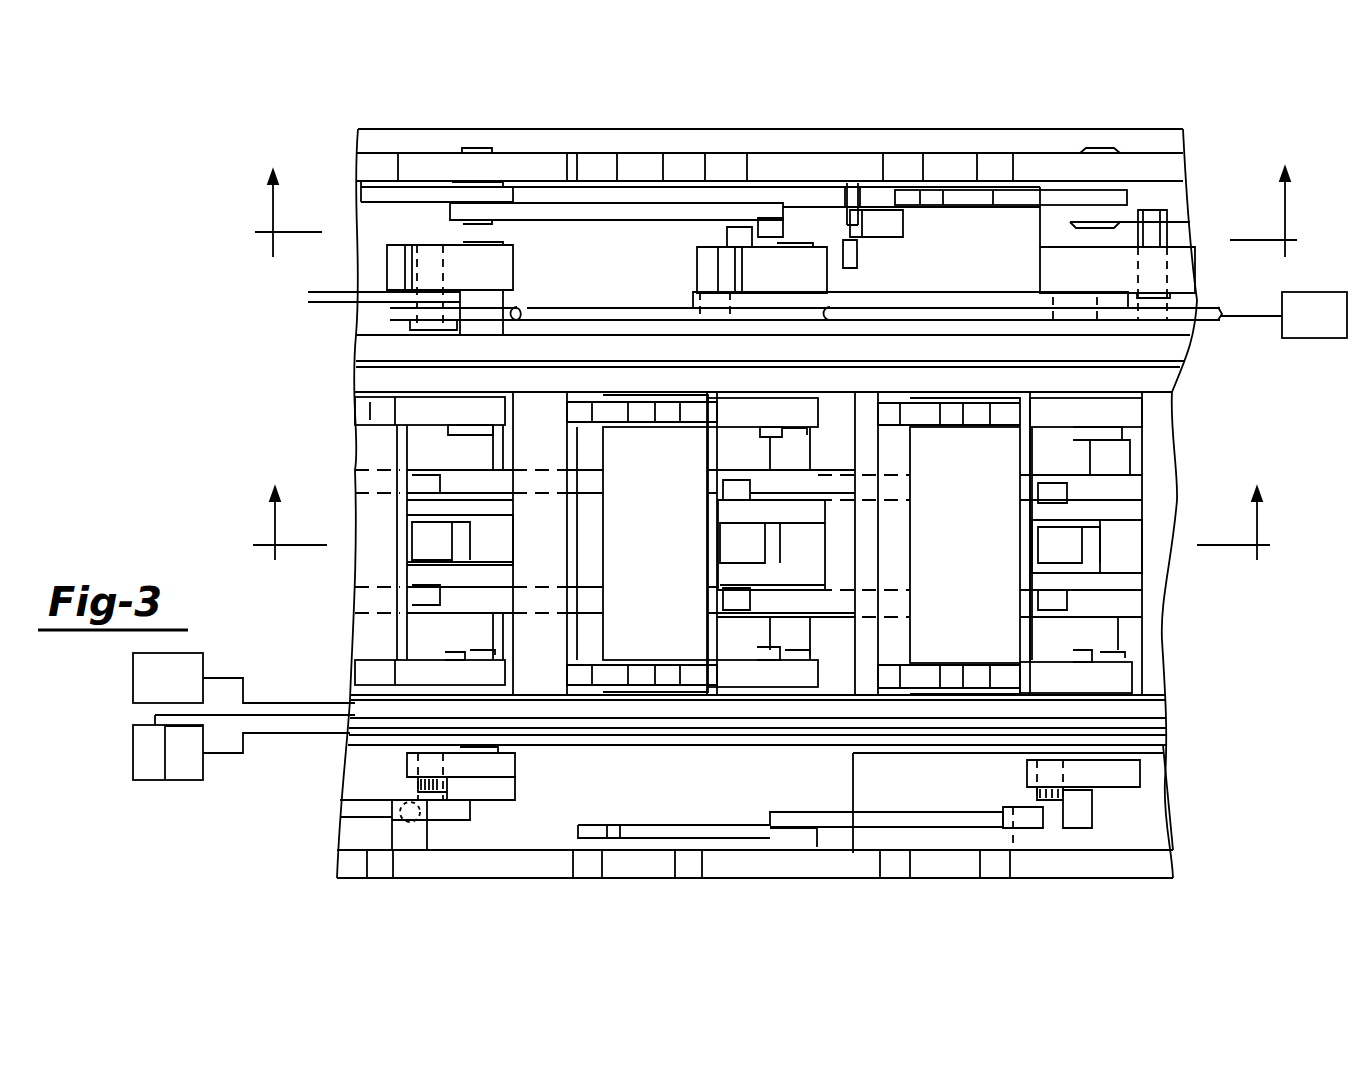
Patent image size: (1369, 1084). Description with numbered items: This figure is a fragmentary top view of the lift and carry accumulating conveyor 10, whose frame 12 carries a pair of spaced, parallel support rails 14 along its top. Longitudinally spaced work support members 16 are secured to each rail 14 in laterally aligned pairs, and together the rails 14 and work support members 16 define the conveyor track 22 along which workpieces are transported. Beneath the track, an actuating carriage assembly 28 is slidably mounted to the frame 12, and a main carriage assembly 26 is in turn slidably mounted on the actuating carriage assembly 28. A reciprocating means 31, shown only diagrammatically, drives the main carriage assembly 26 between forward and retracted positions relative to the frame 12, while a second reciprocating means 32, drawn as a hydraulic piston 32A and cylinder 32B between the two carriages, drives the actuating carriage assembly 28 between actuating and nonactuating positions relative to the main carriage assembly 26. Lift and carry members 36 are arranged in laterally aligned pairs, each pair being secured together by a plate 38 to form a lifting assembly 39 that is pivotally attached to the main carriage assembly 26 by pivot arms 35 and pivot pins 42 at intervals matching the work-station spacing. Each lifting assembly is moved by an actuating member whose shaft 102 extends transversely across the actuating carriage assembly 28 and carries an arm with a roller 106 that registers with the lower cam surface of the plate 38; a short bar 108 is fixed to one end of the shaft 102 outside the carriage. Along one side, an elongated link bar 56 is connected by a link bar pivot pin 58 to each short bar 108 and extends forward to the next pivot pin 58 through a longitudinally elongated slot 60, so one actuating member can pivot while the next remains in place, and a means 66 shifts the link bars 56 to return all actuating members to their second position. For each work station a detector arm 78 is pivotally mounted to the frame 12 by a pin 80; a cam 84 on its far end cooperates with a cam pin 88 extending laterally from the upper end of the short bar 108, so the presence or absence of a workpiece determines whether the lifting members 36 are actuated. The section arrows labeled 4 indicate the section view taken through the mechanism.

The section line 4- 4 is at (775, 344).
The lift and carry accumulating conveyor 10 is at (803, 68).
The frame 12 is at (508, 880).
The support rails 14 is at (1120, 878).
The work support members 16 is at (628, 870).
The conveyor track 22 is at (1338, 498).
The main carriage assembly 26 is at (1160, 713).
The actuating carriage assembly 28 is at (1157, 740).
The reciprocating means 31 is at (197, 660).
The second reciprocating means 32 is at (135, 762).
The hydraulic piston 32A is at (152, 768).
The cylinder 32B is at (184, 768).
The pivot arms 35 is at (452, 380).
The lift and carry members 36 is at (672, 412).
The plate 38 is at (675, 540).
The lifting assembly 39 is at (603, 541).
The pivot pins 42 is at (470, 430).
The link bar 56 is at (358, 295).
The link bar pivot pin 58 is at (410, 312).
The slot 60 is at (515, 302).
The means for shifting link bars 66 is at (1290, 293).
The detector arm 78 is at (553, 210).
The pin 80 is at (484, 150).
The cam 84 is at (777, 228).
The cam pin 88 is at (740, 230).
The shaft 102 is at (1122, 457).
The roller 106 is at (1065, 545).
The short bar 108 is at (463, 262).